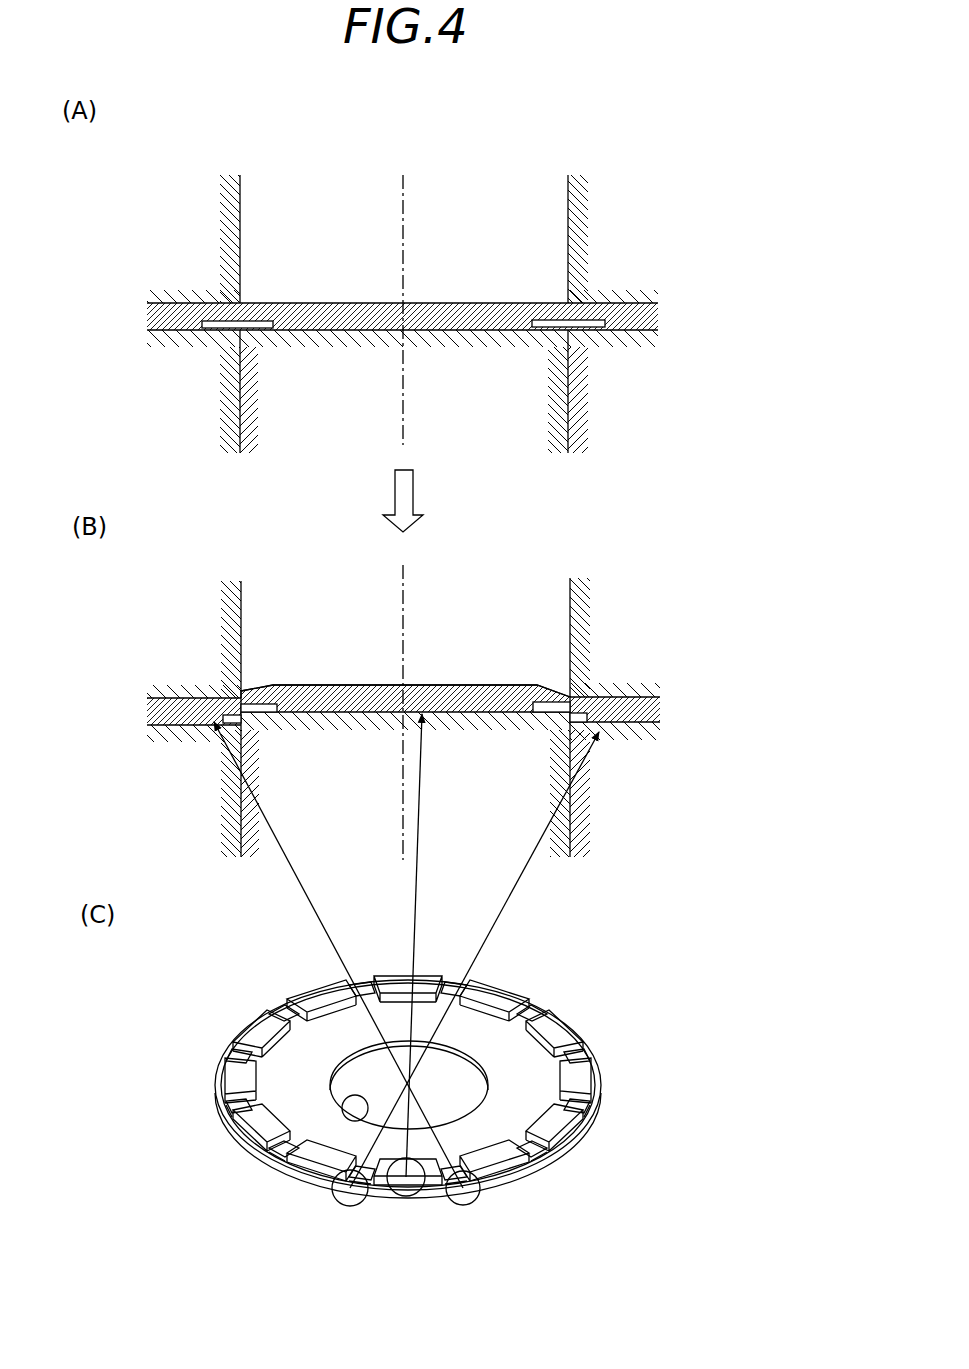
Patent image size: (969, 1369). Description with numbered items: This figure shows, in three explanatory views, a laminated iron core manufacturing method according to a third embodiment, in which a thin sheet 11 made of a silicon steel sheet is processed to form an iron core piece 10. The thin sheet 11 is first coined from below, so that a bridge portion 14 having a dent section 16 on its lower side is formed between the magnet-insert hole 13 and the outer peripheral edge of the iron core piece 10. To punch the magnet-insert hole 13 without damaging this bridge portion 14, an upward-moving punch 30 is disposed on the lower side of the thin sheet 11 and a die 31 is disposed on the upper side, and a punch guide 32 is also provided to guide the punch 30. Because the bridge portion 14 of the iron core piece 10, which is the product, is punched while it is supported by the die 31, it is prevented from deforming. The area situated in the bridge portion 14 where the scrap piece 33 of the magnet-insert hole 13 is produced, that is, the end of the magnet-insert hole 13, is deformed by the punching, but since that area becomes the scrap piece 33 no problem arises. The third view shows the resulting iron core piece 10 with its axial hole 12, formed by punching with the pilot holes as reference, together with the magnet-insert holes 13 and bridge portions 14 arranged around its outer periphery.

The iron core piece 10 is at (635, 700).
The thin sheet 11 is at (668, 313).
The axial hole 12 is at (343, 1100).
The magnet-insert hole 13 is at (562, 1055).
The bridge portion 14 is at (240, 303).
The dent section 16 is at (233, 326).
The upward-moving punch 30 is at (525, 402).
The die 31 is at (617, 195).
The punch guide 32 is at (192, 407).
The scrap piece 33 is at (348, 700).